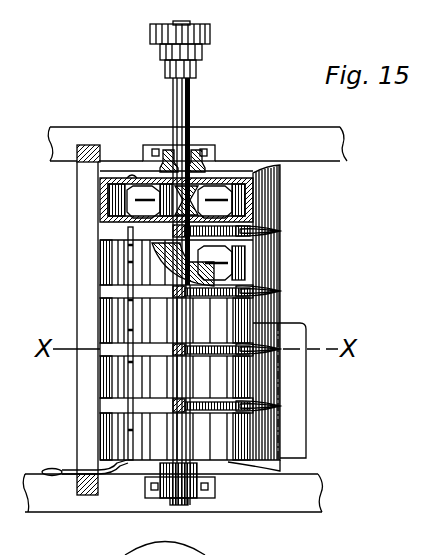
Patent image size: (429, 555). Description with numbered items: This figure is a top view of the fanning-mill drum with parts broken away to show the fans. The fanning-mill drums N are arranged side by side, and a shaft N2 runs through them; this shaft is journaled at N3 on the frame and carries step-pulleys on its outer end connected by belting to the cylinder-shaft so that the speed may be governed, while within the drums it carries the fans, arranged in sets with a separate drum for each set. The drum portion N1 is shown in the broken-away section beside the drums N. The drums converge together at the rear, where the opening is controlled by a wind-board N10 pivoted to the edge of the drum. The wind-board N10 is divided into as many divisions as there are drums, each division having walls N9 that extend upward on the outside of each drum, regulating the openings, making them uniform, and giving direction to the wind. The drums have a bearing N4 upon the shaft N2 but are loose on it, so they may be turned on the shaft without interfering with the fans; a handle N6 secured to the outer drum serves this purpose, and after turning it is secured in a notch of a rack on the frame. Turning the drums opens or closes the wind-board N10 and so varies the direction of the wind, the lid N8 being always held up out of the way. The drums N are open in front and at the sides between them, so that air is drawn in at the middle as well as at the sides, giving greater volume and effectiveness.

The fanning-mill drum N is at (107, 257).
The ring N1 is at (115, 292).
The shaft N2 is at (187, 103).
The journal N3 is at (203, 162).
The bearing N4 is at (202, 173).
The handle N6 is at (72, 474).
The lid N8 is at (298, 388).
The wall N9 is at (278, 227).
The wind-board N10 is at (246, 216).